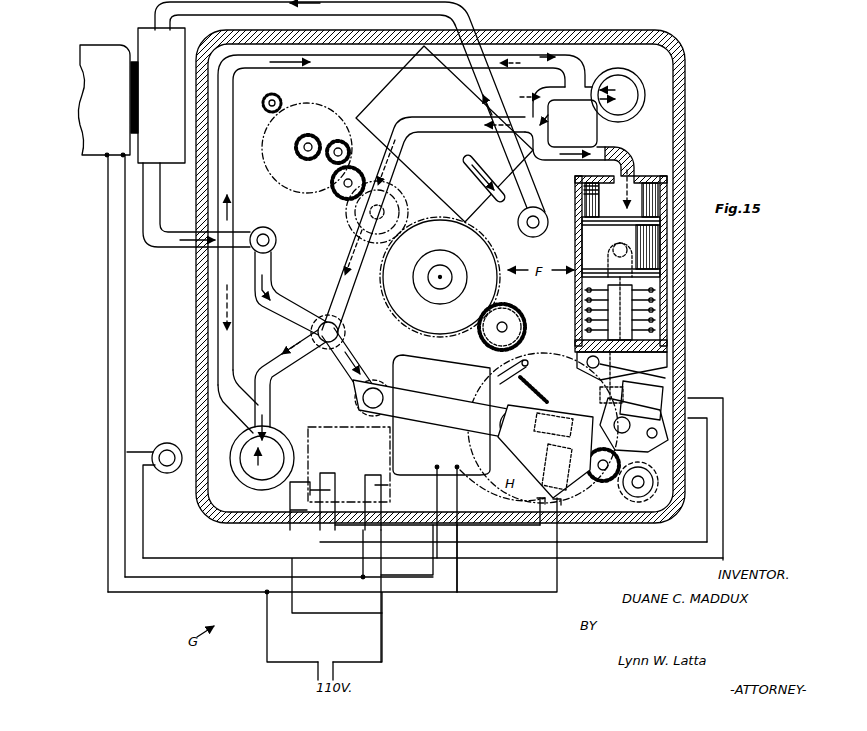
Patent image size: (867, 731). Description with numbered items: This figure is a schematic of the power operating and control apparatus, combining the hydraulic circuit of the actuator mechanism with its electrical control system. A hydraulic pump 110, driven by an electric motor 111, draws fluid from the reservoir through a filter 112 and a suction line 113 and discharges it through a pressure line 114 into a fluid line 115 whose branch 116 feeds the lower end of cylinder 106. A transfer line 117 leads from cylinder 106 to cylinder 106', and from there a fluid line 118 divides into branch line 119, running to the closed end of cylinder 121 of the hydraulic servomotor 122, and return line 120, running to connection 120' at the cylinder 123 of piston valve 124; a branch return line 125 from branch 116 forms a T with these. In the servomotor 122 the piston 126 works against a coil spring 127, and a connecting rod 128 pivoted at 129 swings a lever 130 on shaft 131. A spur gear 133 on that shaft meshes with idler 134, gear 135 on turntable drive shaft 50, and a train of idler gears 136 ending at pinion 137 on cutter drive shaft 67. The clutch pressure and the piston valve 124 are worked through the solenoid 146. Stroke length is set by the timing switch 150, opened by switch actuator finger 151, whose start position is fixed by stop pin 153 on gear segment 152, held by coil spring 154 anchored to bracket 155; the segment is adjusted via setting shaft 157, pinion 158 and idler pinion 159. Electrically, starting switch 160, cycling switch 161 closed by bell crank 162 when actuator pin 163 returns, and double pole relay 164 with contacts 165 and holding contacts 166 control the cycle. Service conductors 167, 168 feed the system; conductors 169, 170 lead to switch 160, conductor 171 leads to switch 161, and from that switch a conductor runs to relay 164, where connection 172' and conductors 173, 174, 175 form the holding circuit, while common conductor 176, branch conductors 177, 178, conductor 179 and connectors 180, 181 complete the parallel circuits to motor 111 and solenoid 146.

The turntable drive shaft 50 is at (440, 285).
The cutter drive shaft 67 is at (270, 98).
The cylinder 106 is at (258, 465).
The cylinder 106' is at (628, 82).
The hydraulic pump 110 is at (161, 95).
The electric motor 111 is at (108, 101).
The filter 112 is at (380, 97).
The suction line 113 is at (448, 10).
The pressure line 114 is at (170, 247).
The fluid line 115 is at (272, 277).
The branch 116 is at (274, 362).
The transfer line 117 is at (236, 325).
The fluid line 118 is at (536, 93).
The branch line 119 is at (585, 153).
The return line 120 is at (423, 225).
The connection 120' is at (356, 365).
The cylinder 121 is at (646, 256).
The hydraulic servomotor 122 is at (664, 168).
The cylinder 123 is at (392, 373).
The piston valve 124 is at (362, 398).
The branch return line 125 is at (320, 318).
The piston 126 is at (640, 242).
The coil spring 127 is at (650, 290).
The connecting rod 128 is at (632, 306).
The pivot 129 is at (627, 439).
The lever 130 is at (665, 445).
The shaft 131 is at (500, 425).
The spur gear 133 is at (530, 352).
The idler 134 is at (527, 326).
The gear 135 is at (497, 302).
The train of idler gears 136 is at (334, 205).
The pinion 137 is at (298, 104).
The solenoid 146 is at (441, 473).
The timing switch 150 is at (560, 497).
The switch actuator finger 151 is at (553, 451).
The gear segment 152 is at (565, 486).
The stop pin 153 is at (564, 397).
The coil spring 154 is at (527, 389).
The bracket 155 is at (496, 378).
The setting shaft 157 is at (645, 492).
The pinion 158 is at (645, 500).
The idler pinion 159 is at (606, 485).
The starting switch 160 is at (167, 450).
The cycling switch 161 is at (664, 392).
The bell crank 162 is at (668, 360).
The actuator pin 163 is at (660, 432).
The double pole relay 164 is at (308, 428).
The contacts 165 is at (386, 486).
The contacts 166 is at (318, 478).
The conductor 167 is at (318, 660).
The conductor 168 is at (356, 650).
The conductor 169 is at (180, 593).
The conductor 170 is at (138, 452).
The conductor 171 is at (196, 558).
The connection 172' is at (418, 526).
The conductor 173 is at (333, 613).
The conductor 174 is at (345, 475).
The conductor 175 is at (558, 578).
The common conductor 176 is at (374, 492).
The branch conductor 177 is at (274, 577).
The branch conductor 178 is at (437, 500).
The conductor 179 is at (382, 606).
The connector 180 is at (107, 384).
The connector 181 is at (459, 576).